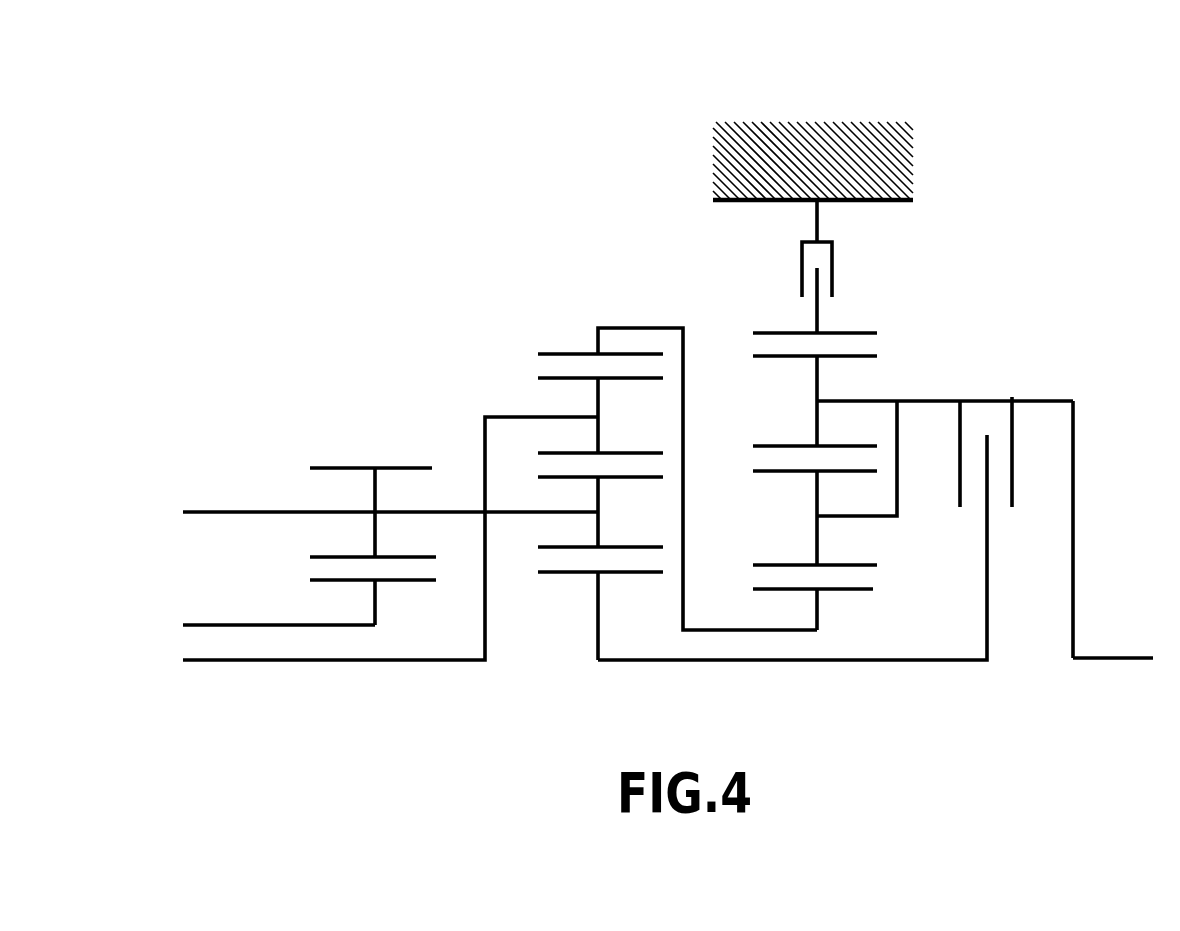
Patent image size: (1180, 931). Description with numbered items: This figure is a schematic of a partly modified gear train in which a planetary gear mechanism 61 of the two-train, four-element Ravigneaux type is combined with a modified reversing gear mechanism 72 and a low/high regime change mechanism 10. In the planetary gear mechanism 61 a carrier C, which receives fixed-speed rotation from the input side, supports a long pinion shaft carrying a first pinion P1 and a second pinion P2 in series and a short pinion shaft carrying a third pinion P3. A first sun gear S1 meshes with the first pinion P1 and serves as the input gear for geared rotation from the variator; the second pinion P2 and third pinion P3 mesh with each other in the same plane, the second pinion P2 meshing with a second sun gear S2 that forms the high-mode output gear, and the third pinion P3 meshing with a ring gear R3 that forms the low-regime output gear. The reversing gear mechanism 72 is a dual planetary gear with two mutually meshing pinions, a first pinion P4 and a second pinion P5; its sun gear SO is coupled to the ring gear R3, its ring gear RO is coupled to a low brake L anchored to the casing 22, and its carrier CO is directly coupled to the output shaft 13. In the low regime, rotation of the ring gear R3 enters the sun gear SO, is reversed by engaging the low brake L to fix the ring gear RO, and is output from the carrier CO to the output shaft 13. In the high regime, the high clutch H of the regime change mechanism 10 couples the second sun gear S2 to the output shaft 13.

The first pinion P1 is at (390, 467).
The first sun gear S1 is at (335, 582).
The carrier C is at (483, 450).
The ring gear R3 is at (575, 352).
The third pinion P3 is at (625, 382).
The second pinion P2 is at (625, 480).
The second sun gear S2 is at (570, 573).
The planetary gear mechanism 61 is at (757, 378).
The casing 22 is at (823, 152).
The reversing gear mechanism 72 is at (884, 239).
The low brake L is at (833, 273).
The ring gear RO is at (845, 330).
The second pinion P5 is at (790, 358).
The first pinion P4 is at (795, 563).
The carrier CO is at (860, 397).
The sun gear SO is at (845, 590).
The high clutch H is at (1012, 397).
The low/high regime change mechanism 10 is at (1096, 404).
The output shaft 13 is at (1098, 658).